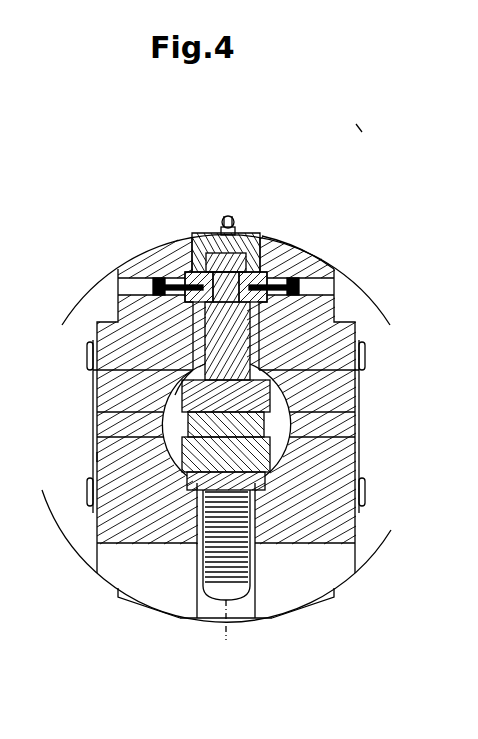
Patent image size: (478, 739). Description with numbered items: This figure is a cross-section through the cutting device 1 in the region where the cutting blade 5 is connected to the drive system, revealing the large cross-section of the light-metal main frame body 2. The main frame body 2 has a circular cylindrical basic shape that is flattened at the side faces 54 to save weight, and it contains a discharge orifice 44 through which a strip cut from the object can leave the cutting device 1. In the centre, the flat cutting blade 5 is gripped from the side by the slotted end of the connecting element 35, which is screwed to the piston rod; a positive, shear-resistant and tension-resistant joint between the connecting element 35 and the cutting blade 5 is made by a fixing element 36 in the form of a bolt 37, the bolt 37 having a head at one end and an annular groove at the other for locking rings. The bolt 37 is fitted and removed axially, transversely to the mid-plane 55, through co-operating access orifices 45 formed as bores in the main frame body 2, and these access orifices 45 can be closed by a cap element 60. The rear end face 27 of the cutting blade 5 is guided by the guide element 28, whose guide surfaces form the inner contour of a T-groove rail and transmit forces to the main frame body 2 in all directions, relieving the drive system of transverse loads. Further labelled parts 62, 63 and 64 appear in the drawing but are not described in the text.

The cutting device 1 is at (4, 46).
The main frame body 2 is at (357, 338).
The cutting blade 5 is at (338, 308).
The rear end face 27 is at (197, 218).
The guide element 28 is at (262, 220).
The connecting element 35 is at (292, 437).
The fixing element 36 is at (183, 377).
The bolt 37 is at (93, 457).
The discharge orifice 44 is at (197, 557).
The access orifices 45 is at (362, 390).
The side faces 54 is at (92, 532).
The mid-plane 55 is at (255, 610).
The cap element 60 is at (360, 405).
The housing part 62 is at (362, 348).
The housing top 63 is at (330, 238).
The seal 64 is at (160, 280).